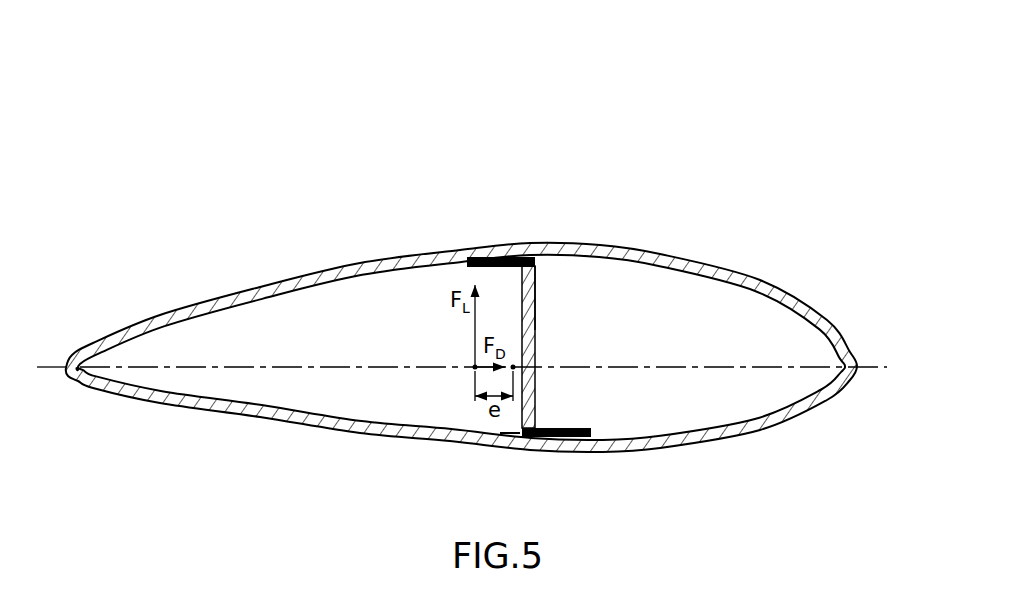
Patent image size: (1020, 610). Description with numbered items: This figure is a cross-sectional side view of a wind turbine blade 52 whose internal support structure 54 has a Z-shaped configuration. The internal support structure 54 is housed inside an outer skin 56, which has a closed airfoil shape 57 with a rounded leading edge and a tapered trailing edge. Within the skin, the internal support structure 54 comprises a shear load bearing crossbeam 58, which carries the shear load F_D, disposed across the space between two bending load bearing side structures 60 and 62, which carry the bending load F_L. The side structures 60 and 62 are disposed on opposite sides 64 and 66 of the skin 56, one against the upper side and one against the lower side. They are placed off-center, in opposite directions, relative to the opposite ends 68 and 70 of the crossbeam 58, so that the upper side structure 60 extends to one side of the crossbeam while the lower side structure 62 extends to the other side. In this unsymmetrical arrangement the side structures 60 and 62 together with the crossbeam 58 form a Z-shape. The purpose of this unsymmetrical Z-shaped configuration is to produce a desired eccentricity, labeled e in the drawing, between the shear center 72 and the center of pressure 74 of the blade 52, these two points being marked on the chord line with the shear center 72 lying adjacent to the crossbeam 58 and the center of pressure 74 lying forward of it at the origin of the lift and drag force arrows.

The blade 52 is at (708, 103).
The internal support structure 54 is at (519, 283).
The outer skin 56 is at (590, 247).
The closed airfoil shape 57 is at (760, 277).
The shear load bearing crossbeam 58 is at (535, 393).
The bending load bearing side structure 60 is at (468, 262).
The bending load bearing side structure 62 is at (604, 437).
The side of the skin 64 is at (232, 319).
The side of the skin 66 is at (255, 392).
The end of the crossbeam 68 is at (542, 272).
The end of the crossbeam 70 is at (519, 433).
The shear center 72 is at (514, 364).
The center of pressure 74 is at (475, 369).